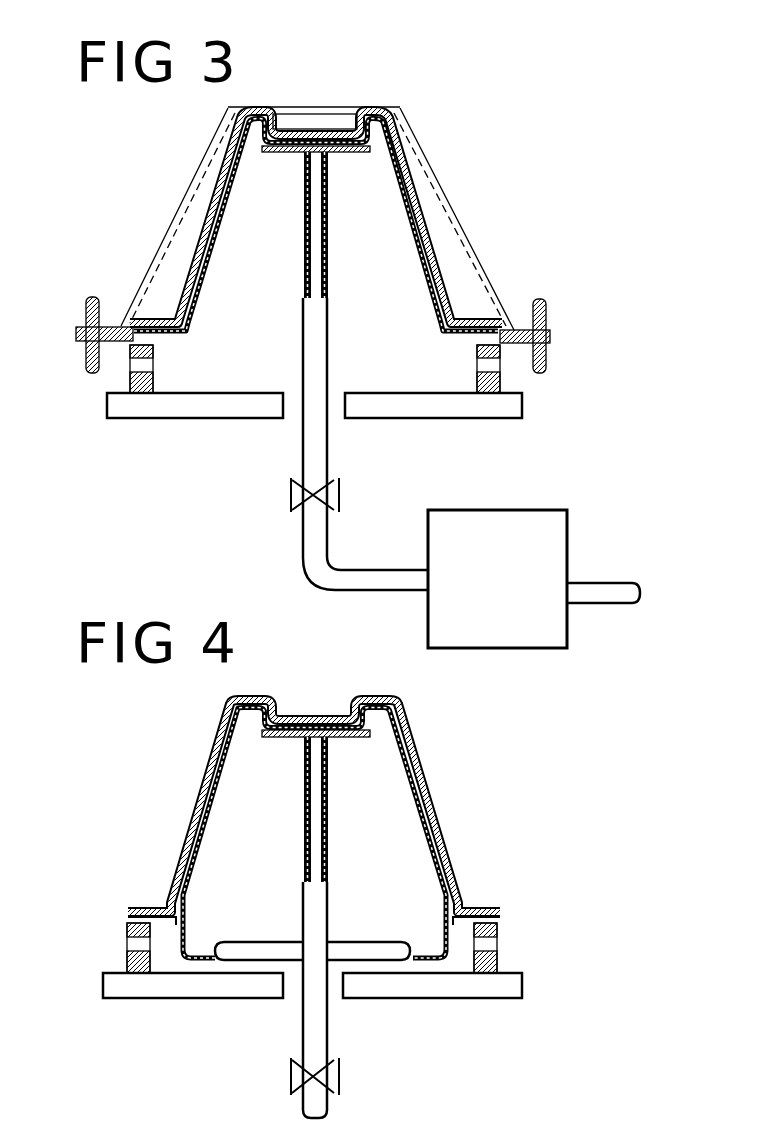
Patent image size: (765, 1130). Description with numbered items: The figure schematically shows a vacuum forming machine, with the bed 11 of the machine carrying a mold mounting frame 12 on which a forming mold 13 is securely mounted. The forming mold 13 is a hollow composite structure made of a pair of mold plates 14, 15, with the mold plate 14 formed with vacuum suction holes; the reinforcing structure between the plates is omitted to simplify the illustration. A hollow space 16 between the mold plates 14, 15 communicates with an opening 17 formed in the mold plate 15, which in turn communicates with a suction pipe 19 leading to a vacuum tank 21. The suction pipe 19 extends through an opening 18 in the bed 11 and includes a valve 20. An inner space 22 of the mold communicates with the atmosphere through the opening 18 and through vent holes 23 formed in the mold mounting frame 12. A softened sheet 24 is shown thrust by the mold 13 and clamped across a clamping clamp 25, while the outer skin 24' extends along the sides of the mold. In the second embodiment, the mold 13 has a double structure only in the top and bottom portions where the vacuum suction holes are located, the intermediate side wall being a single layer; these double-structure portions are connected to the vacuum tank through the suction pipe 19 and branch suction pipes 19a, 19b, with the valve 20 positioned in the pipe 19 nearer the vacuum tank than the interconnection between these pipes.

In FIG. 3, the vacuum forming machine bed 11 is at (163, 402).
In FIG. 4, the vacuum forming machine bed 11 is at (165, 988).
In FIG. 3, the mold mounting frame 12 is at (486, 402).
In FIG. 4, the mold mounting frame 12 is at (485, 988).
In FIG. 3, the forming mold 13 is at (448, 284).
In FIG. 4, the forming mold 13 is at (438, 787).
In FIG. 3, the mold plate 14 is at (437, 227).
In FIG. 4, the mold plate 14 is at (192, 800).
In FIG. 3, the mold plate 15 is at (422, 254).
In FIG. 4, the mold plate 15 is at (358, 737).
In FIG. 3, the hollow space 16 is at (420, 212).
In FIG. 4, the hollow space 16 is at (335, 722).
In FIG. 3, the opening 17 is at (338, 152).
In FIG. 4, the opening 17 is at (282, 737).
In FIG. 3, the opening 18 is at (297, 403).
In FIG. 4, the opening 18 is at (296, 990).
In FIG. 3, the suction pipe 19 is at (303, 262).
In FIG. 4, the suction pipe 19 is at (303, 814).
In FIG. 4, the branch suction pipe 19a is at (258, 950).
In FIG. 4, the branch suction pipe 19b is at (388, 950).
In FIG. 3, the valve 20 is at (291, 498).
In FIG. 4, the valve 20 is at (340, 1077).
In FIG. 3, the vacuum tank 21 is at (542, 530).
In FIG. 3, the inner space 22 is at (282, 342).
In FIG. 4, the inner space 22 is at (399, 854).
In FIG. 3, the vent holes 23 is at (492, 364).
In FIG. 4, the vent holes 23 is at (500, 950).
In FIG. 3, the softened sheet 24 is at (314, 88).
In FIG. 3, the outer skin 24' is at (307, 219).
In FIG. 3, the clamping clamp 25 is at (545, 316).